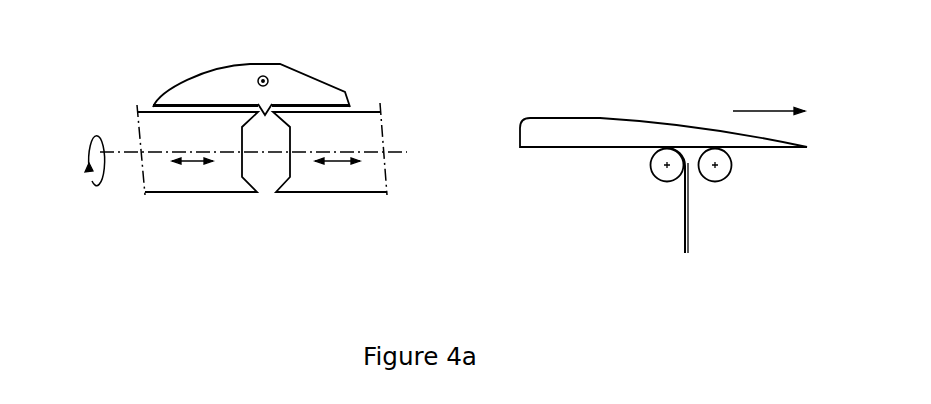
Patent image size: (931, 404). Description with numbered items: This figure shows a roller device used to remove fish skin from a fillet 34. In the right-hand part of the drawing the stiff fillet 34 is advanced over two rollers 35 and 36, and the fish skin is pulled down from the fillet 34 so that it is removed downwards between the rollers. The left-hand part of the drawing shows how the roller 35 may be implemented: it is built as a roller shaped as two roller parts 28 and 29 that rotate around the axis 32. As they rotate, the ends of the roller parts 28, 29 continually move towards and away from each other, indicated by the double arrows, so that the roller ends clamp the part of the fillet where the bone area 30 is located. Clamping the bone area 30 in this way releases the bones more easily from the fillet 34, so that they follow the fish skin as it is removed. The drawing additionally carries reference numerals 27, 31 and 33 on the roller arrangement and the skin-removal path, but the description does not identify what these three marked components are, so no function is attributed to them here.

The cutter head 27 is at (308, 87).
The roller part 28 is at (198, 182).
The roller part 29 is at (357, 182).
The bone area 30 is at (265, 115).
The pivot axis 31 is at (258, 77).
The axis 32 is at (76, 140).
The film 33 is at (688, 242).
The fillet 34 is at (775, 85).
The roller 35 is at (657, 175).
The roller 36 is at (722, 172).